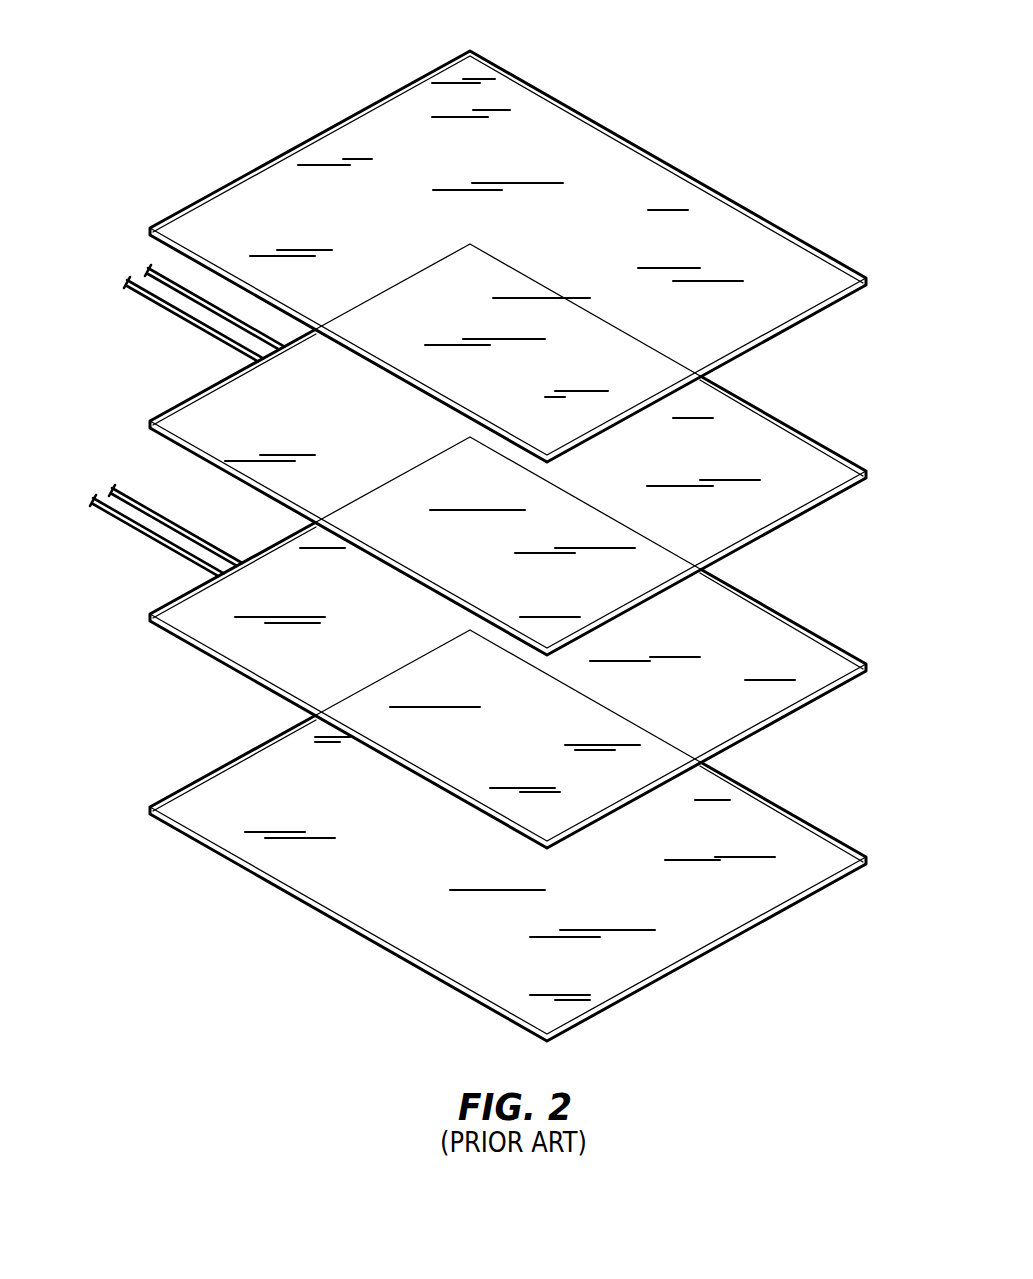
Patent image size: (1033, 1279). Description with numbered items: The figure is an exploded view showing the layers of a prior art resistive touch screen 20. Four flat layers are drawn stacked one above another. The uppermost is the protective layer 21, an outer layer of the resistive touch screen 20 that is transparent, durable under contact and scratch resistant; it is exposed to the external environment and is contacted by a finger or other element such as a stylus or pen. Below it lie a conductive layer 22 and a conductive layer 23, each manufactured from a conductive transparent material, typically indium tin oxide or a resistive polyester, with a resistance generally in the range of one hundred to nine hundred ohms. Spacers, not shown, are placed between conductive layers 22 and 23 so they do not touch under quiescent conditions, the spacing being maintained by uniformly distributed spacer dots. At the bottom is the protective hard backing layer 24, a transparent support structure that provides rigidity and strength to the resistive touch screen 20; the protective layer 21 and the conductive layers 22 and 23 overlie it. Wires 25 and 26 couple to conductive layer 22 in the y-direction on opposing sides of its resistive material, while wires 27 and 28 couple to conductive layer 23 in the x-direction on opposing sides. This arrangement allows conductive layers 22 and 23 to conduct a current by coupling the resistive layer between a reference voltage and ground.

The resistive touch screen 20 is at (690, 100).
The protective layer 21 is at (806, 260).
The conductive layer 22 is at (805, 455).
The conductive layer 23 is at (805, 647).
The hard backing layer 24 is at (805, 840).
The wire 25 is at (150, 266).
The wire 26 is at (137, 299).
The wire 27 is at (110, 487).
The wire 28 is at (113, 522).